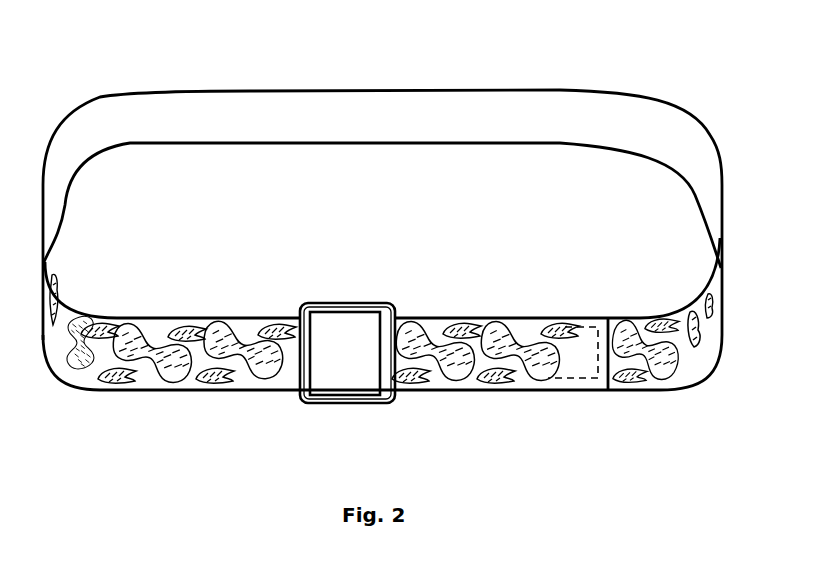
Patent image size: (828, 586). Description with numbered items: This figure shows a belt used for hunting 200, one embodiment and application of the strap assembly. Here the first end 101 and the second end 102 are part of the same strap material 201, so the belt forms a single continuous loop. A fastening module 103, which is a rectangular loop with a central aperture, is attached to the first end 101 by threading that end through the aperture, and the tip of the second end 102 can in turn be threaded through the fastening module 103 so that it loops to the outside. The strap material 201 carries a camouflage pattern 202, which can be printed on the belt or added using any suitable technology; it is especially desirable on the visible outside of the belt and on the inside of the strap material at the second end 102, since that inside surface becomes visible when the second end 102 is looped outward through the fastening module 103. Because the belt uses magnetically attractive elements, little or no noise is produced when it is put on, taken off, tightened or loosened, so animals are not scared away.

The belt used for hunting 200 is at (158, 72).
The strap material 201 is at (390, 89).
The first end 101 is at (215, 317).
The second end 102 is at (433, 317).
The fastening module 103 is at (343, 303).
The camouflage pattern 202 is at (170, 373).